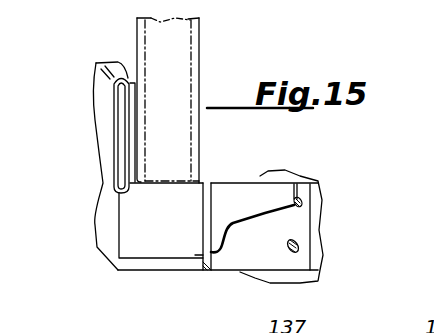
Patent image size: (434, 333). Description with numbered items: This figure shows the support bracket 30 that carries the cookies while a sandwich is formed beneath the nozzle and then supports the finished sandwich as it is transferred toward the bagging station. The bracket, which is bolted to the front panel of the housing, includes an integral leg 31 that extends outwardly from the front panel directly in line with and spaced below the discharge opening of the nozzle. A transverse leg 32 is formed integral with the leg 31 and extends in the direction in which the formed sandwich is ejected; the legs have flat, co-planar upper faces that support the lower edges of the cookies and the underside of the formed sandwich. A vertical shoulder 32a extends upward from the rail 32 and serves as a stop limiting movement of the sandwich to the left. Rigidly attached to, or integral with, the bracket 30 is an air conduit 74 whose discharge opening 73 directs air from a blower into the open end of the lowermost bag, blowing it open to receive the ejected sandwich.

The support bracket 30 is at (228, 272).
The leg 31 is at (205, 272).
The leg 32 is at (233, 193).
The vertical shoulder 32a is at (138, 110).
The discharge opening 73 is at (120, 148).
The air conduit 74 is at (105, 107).